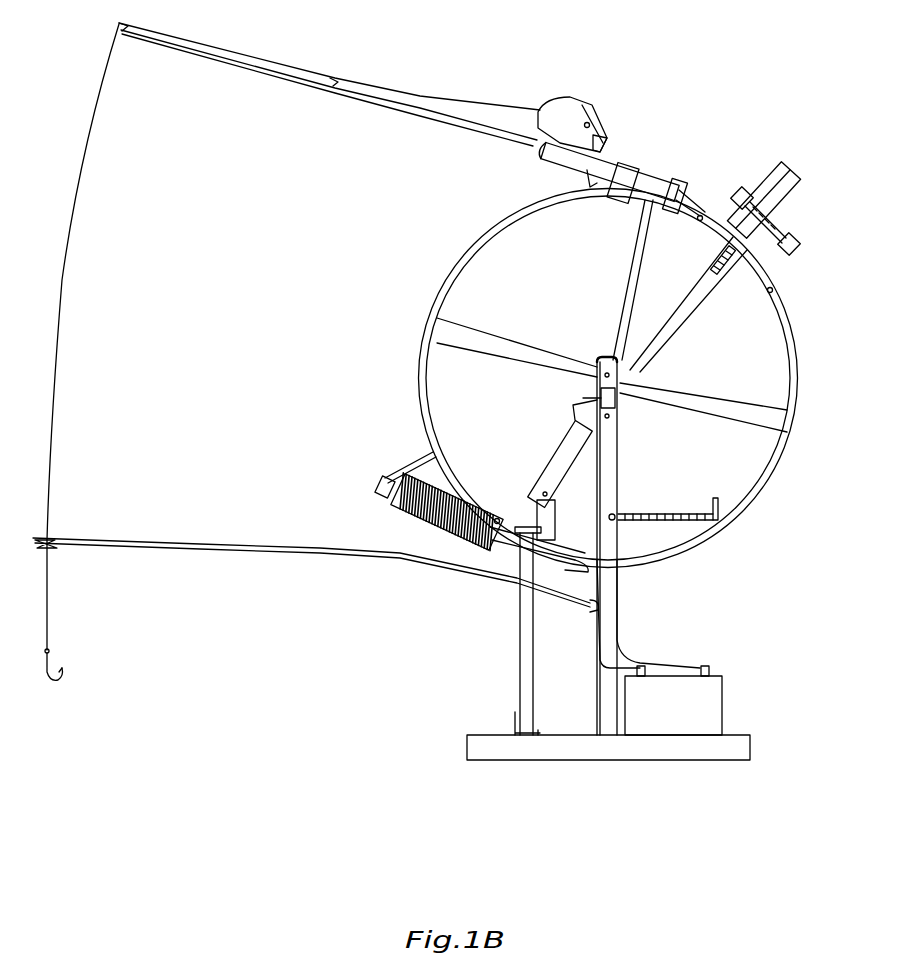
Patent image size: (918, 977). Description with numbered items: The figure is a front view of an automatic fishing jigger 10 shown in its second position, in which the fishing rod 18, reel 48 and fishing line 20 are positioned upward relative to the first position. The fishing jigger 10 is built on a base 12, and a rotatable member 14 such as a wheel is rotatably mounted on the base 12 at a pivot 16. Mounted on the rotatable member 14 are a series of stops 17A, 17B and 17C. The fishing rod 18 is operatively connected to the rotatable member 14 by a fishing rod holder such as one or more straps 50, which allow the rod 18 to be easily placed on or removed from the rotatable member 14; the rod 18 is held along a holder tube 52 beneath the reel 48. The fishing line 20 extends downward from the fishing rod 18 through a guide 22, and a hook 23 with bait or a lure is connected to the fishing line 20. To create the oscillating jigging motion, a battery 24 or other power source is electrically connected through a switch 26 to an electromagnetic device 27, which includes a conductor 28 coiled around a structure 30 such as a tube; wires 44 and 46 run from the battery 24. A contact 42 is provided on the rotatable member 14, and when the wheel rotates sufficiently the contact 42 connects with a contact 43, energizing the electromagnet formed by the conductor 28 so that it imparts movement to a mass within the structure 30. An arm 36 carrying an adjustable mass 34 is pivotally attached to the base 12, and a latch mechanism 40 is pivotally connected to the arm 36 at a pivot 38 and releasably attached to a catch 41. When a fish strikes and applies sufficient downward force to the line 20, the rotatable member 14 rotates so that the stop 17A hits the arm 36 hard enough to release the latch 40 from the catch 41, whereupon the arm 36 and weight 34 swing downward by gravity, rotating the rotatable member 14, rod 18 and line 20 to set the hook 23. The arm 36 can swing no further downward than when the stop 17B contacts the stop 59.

The fishing jigger 10 is at (780, 96).
The base 12 is at (510, 768).
The rotatable member 14 is at (772, 470).
The pivot 16 is at (595, 365).
The stop 17A is at (700, 221).
The stop 17B is at (773, 290).
The stop 17C is at (497, 540).
The fishing rod 18 is at (336, 86).
The fishing line 20 is at (58, 350).
The guide 22 is at (255, 550).
The hook 23 is at (52, 662).
The battery 24 is at (724, 690).
The switch 26 is at (613, 398).
The electromagnetic device 27 is at (435, 540).
The conductor 28 is at (395, 508).
The structure 30 is at (376, 485).
The adjustable mass 34 is at (785, 212).
The arm 36 is at (800, 172).
The pivot 38 is at (545, 492).
The latch mechanism 40 is at (540, 508).
The catch 41 is at (530, 528).
The contact 42 is at (520, 590).
The contact 43 is at (588, 597).
The wire 44 is at (604, 670).
The wire 46 is at (680, 660).
The reel 48 is at (548, 105).
The straps 50 is at (680, 186).
The rod holder tube 52 is at (640, 178).
The stop 59 is at (714, 500).